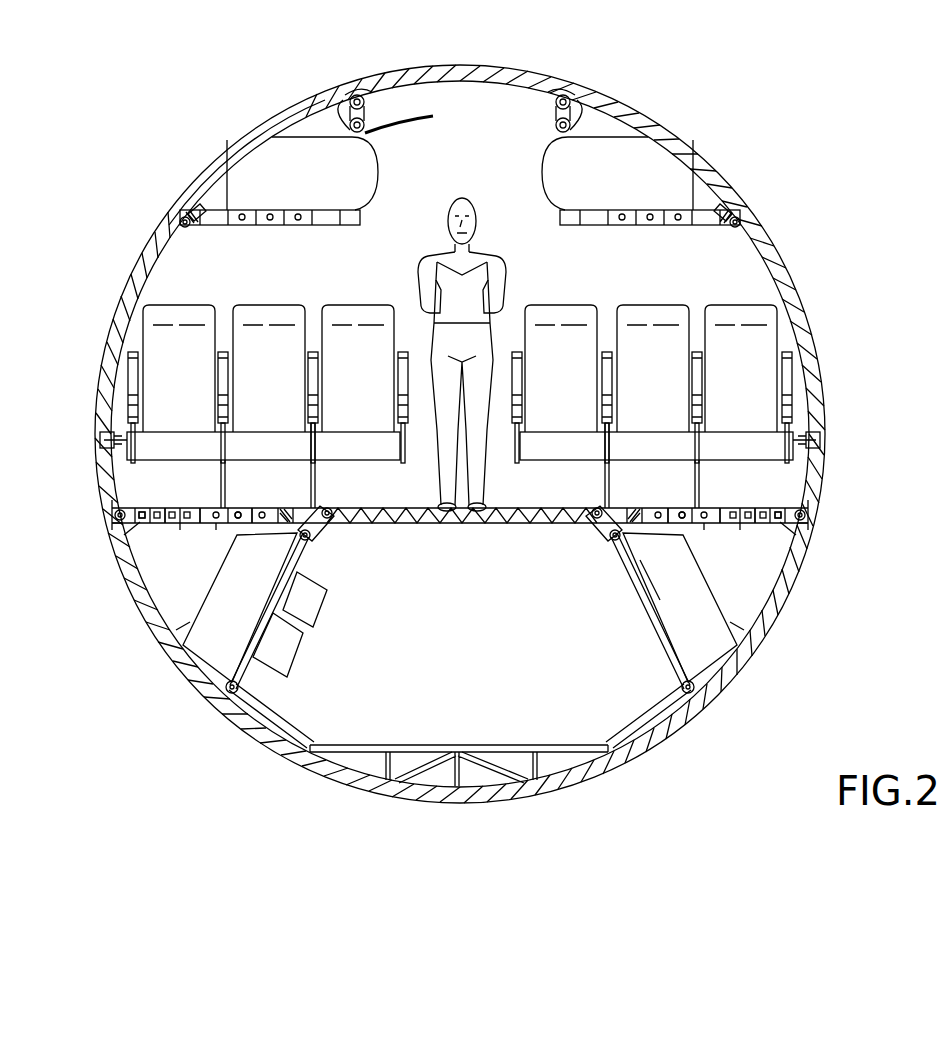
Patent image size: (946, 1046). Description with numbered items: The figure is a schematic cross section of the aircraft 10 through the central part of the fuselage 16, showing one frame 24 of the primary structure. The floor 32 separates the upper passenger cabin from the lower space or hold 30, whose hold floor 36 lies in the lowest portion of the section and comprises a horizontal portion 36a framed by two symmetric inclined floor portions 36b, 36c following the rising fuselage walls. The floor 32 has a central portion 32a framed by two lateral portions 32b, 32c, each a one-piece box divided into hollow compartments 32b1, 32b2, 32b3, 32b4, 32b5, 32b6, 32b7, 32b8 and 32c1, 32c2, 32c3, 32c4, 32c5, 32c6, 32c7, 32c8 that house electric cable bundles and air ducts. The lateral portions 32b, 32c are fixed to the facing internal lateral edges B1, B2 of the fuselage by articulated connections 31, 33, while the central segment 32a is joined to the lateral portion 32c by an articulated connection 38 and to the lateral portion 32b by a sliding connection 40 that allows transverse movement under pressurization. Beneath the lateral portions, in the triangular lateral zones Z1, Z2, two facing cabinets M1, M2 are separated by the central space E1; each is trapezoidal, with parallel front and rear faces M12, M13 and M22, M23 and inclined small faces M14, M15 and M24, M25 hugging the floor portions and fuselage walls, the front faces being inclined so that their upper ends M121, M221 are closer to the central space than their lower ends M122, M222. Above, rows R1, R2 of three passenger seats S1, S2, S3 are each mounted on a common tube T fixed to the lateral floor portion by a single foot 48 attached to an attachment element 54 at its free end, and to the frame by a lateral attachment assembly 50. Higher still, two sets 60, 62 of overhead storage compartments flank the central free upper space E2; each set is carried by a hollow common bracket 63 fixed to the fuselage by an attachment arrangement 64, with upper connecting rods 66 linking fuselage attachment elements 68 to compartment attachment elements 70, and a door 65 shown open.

The aircraft 10 is at (515, 434).
The central part of the fuselage 16 is at (823, 338).
The frame 24 is at (818, 470).
The lower space 30 is at (456, 665).
The articulated connection 31 is at (806, 520).
The floor 32 is at (466, 507).
The central floor portion 32a is at (478, 524).
The lateral floor portion 32b is at (792, 508).
The compartment 32b1 is at (798, 528).
The compartment 32b2 is at (742, 526).
The compartment 32b3 is at (778, 512).
The compartment 32b4 is at (755, 510).
The compartment 32b5 is at (718, 510).
The compartment 32b6 is at (700, 526).
The compartment 32b7 is at (682, 512).
The compartment 32b8 is at (668, 510).
The lateral floor portion 32c is at (130, 508).
The compartment 32c1 is at (118, 526).
The compartment 32c2 is at (178, 526).
The compartment 32c3 is at (160, 502).
The compartment 32c4 is at (168, 510).
The compartment 32c5 is at (202, 510).
The compartment 32c6 is at (222, 526).
The compartment 32c7 is at (256, 502).
The compartment 32c8 is at (262, 510).
The articulated connection 33 is at (116, 513).
The hold floor 36 is at (460, 752).
The horizontal portion 36a is at (470, 790).
The inclined floor portion 36b is at (610, 760).
The inclined floor portion 36c is at (310, 760).
The articulated connection 38 is at (312, 538).
The connection 40 is at (608, 538).
The foot 48 is at (318, 470).
The lateral attachment assembly 50 is at (108, 440).
The attachment element 54 is at (332, 510).
The set of lateral overhead storage compartments 60 is at (637, 176).
The set of lateral overhead storage compartments 62 is at (277, 136).
The common bracket 63 is at (225, 200).
The attachment arrangement 64 is at (185, 212).
The door 65 is at (425, 113).
The upper connecting rod 66 is at (375, 92).
The attachment element 68 is at (357, 96).
The attachment element 70 is at (348, 100).
The internal lateral edge of the fuselage B1 is at (780, 530).
The internal lateral edge of the fuselage B2 is at (140, 530).
The central space E1 is at (476, 652).
The central free upper space E2 is at (474, 172).
The cabinet M1 is at (682, 663).
The front face M12 is at (650, 760).
The upper end M121 is at (603, 548).
The lower end M122 is at (665, 712).
The rear face M13 is at (742, 640).
The upper face M14 is at (612, 560).
The lower face M15 is at (698, 695).
The cabinet M2 is at (277, 663).
The front face M22 is at (270, 760).
The upper end M221 is at (320, 548).
The lower end M222 is at (262, 712).
The rear face M23 is at (200, 665).
The upper face M24 is at (312, 605).
The lower face M25 is at (222, 695).
The row of passenger seats R1 is at (544, 303).
The row of passenger seats R2 is at (224, 372).
The passenger seat S1 is at (172, 303).
The passenger seat S2 is at (262, 303).
The passenger seat S3 is at (351, 303).
The tube T is at (461, 354).
The lateral zone Z1 is at (752, 628).
The lateral zone Z2 is at (168, 628).